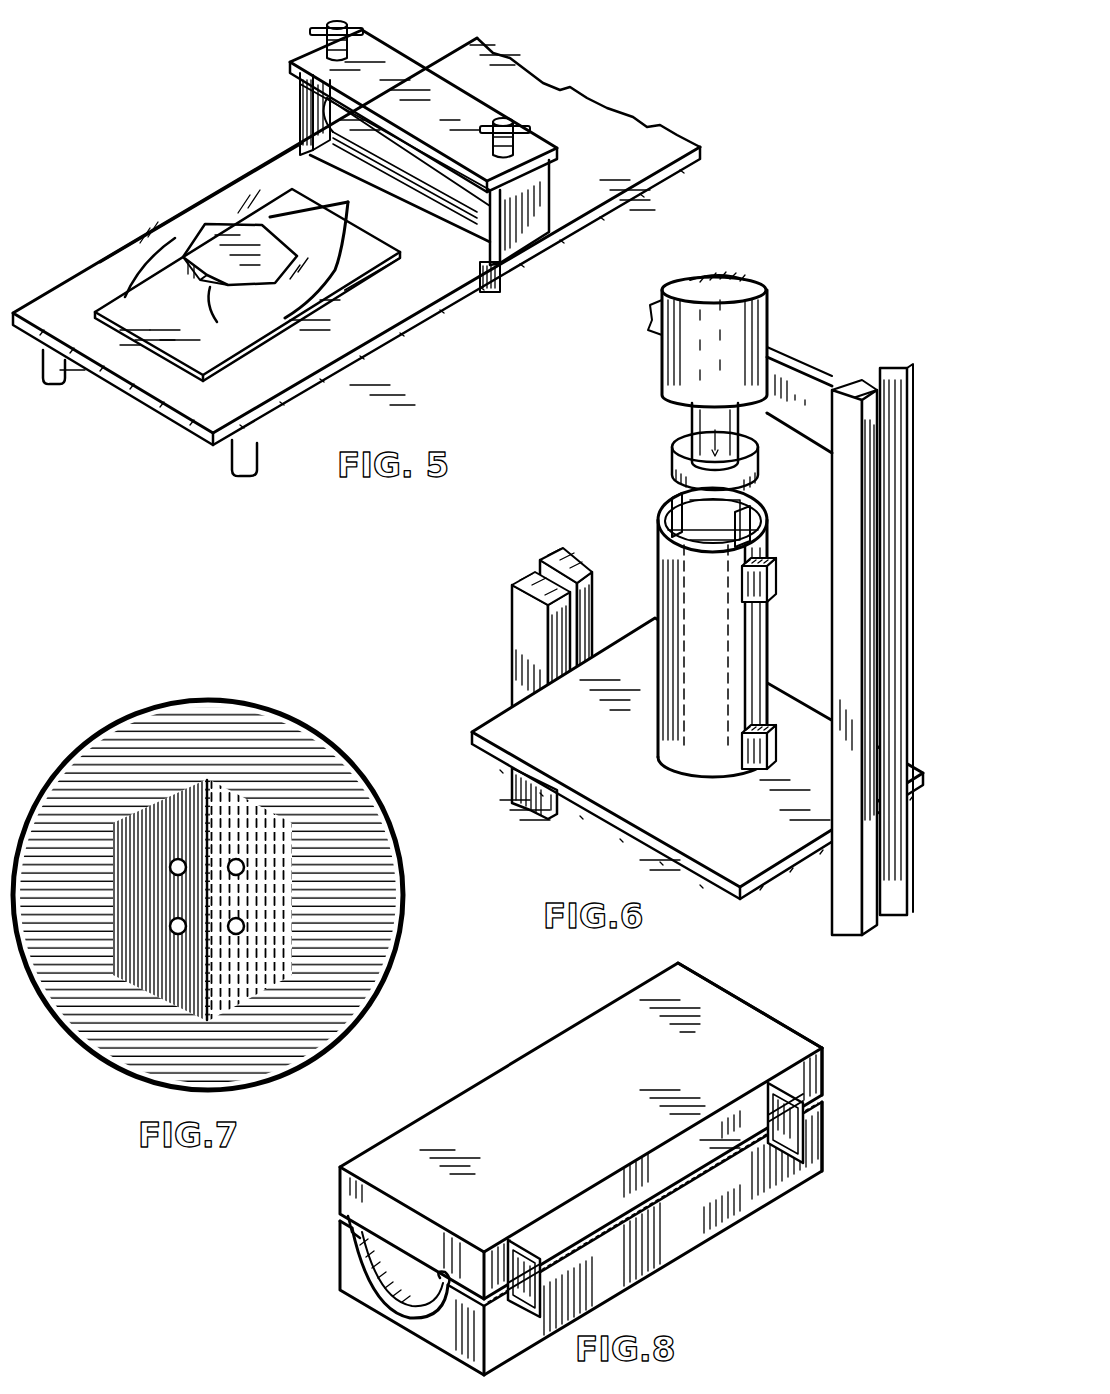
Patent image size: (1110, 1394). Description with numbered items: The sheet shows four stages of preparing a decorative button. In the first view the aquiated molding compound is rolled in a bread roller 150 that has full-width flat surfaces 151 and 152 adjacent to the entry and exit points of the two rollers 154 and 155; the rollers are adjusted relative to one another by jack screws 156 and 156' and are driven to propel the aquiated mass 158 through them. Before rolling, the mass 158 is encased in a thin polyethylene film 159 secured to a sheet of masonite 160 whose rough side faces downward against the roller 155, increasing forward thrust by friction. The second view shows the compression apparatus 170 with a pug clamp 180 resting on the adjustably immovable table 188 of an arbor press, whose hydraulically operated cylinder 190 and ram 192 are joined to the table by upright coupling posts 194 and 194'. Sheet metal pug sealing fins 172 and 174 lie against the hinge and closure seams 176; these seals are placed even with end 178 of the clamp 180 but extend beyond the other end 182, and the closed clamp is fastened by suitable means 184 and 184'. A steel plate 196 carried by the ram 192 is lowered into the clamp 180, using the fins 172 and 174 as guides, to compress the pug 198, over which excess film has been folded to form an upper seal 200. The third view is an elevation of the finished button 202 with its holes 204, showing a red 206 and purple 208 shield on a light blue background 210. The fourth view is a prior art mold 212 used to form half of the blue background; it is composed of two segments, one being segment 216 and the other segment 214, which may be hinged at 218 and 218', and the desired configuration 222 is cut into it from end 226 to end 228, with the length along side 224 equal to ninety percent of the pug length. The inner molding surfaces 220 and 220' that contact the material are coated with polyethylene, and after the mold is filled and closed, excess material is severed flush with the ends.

In FIG. 5, the bread roller 150 is at (470, 351).
In FIG. 5, the flat surface 151 is at (288, 379).
In FIG. 5, the flat surface 152 is at (614, 160).
In FIG. 5, the roller 154 is at (332, 118).
In FIG. 5, the roller 155 is at (330, 150).
In FIG. 5, the jack screw 156 is at (522, 127).
In FIG. 5, the jack screw 156' is at (352, 30).
In FIG. 5, the aquiated mass 158 is at (190, 240).
In FIG. 5, the polyethylene film 159 is at (222, 198).
In FIG. 5, the sheet of masonite 160 is at (395, 262).
In FIG. 6, the apparatus 170 is at (637, 880).
In FIG. 6, the pug sealing fin 172 is at (745, 525).
In FIG. 6, the pug sealing fin 174 is at (672, 505).
In FIG. 6, the seam seal 176 is at (742, 650).
In FIG. 6, the end of pug clamp 178 is at (660, 760).
In FIG. 6, the pug clamp 180 is at (672, 736).
In FIG. 6, the end of pug clamp 182 is at (665, 545).
In FIG. 6, the fastening means 184 is at (778, 574).
In FIG. 6, the fastening means 184' is at (770, 763).
In FIG. 6, the table 188 is at (495, 720).
In FIG. 6, the hydraulically operated cylinder 190 is at (750, 317).
In FIG. 6, the ram 192 is at (700, 425).
In FIG. 6, the upright coupling post 194 is at (872, 635).
In FIG. 6, the upright coupling post 194' is at (528, 683).
In FIG. 6, the steel plate 196 is at (680, 465).
In FIG. 6, the pug 198 is at (735, 502).
In FIG. 6, the upper seal 200 is at (670, 522).
In FIG. 7, the button 202 is at (228, 1074).
In FIG. 7, the holes 204 is at (170, 922).
In FIG. 7, the red shield portion 206 is at (146, 830).
In FIG. 7, the purple shield portion 208 is at (243, 826).
In FIG. 7, the light blue background 210 is at (388, 930).
In FIG. 8, the mold 212 is at (540, 1160).
In FIG. 8, the base end 214 is at (823, 1152).
In FIG. 8, the mold segment 216 is at (825, 1065).
In FIG. 8, the hinge 218 is at (534, 1239).
In FIG. 8, the hinge 218' is at (750, 1106).
In FIG. 8, the inner molding surface 220 is at (398, 1266).
In FIG. 8, the inner molding surface 220' is at (399, 1291).
In FIG. 8, the configuration 222 is at (345, 1252).
In FIG. 8, the side of mold 224 is at (482, 1076).
In FIG. 8, the end of mold 226 is at (400, 1194).
In FIG. 8, the end of mold 228 is at (738, 1004).